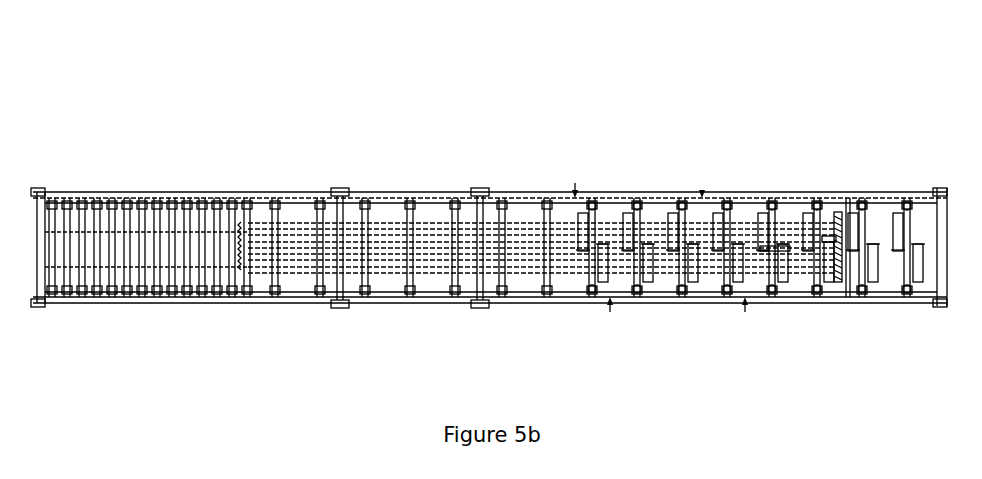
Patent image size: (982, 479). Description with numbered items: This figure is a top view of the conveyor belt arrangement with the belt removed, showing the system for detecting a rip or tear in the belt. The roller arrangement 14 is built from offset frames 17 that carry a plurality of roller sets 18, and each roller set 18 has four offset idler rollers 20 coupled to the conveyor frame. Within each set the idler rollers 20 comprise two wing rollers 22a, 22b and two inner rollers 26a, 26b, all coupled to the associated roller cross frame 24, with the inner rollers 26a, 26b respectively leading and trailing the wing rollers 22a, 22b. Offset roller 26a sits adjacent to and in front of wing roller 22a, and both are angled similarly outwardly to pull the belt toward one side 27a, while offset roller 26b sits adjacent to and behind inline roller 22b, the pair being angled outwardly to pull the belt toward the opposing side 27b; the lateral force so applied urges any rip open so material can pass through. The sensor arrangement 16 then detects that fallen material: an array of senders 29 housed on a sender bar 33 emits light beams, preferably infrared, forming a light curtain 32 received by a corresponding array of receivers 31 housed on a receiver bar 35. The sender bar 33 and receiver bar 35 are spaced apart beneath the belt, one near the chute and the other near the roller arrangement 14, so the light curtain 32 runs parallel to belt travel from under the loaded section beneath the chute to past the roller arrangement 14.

The roller arrangement 14 is at (669, 158).
The sensor arrangement 16 is at (848, 225).
The offset frame 17 is at (678, 224).
The roller set 18 is at (704, 158).
The idler roller 20 is at (675, 242).
The wing roller 22a is at (768, 226).
The wing roller 22b is at (773, 272).
The roller cross frame 24 is at (777, 248).
The inner roller 26a is at (763, 228).
The inner roller 26b is at (781, 275).
The side 27a is at (830, 240).
The opposing side 27b is at (829, 278).
The array of senders 29 is at (225, 196).
The sender bar 33 is at (237, 232).
The array of receivers 31 is at (873, 179).
The receiver bar 35 is at (838, 238).
The light curtain 32 is at (437, 235).